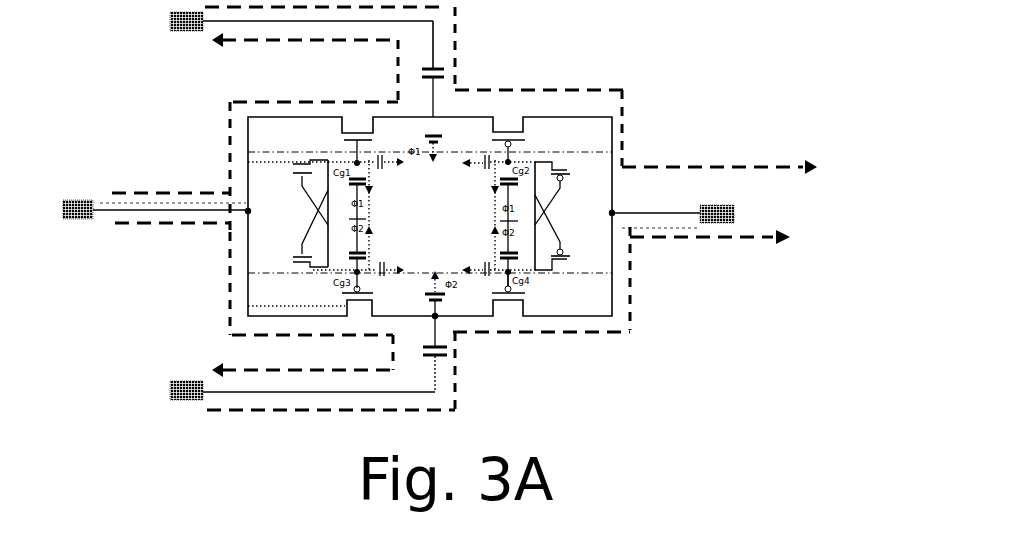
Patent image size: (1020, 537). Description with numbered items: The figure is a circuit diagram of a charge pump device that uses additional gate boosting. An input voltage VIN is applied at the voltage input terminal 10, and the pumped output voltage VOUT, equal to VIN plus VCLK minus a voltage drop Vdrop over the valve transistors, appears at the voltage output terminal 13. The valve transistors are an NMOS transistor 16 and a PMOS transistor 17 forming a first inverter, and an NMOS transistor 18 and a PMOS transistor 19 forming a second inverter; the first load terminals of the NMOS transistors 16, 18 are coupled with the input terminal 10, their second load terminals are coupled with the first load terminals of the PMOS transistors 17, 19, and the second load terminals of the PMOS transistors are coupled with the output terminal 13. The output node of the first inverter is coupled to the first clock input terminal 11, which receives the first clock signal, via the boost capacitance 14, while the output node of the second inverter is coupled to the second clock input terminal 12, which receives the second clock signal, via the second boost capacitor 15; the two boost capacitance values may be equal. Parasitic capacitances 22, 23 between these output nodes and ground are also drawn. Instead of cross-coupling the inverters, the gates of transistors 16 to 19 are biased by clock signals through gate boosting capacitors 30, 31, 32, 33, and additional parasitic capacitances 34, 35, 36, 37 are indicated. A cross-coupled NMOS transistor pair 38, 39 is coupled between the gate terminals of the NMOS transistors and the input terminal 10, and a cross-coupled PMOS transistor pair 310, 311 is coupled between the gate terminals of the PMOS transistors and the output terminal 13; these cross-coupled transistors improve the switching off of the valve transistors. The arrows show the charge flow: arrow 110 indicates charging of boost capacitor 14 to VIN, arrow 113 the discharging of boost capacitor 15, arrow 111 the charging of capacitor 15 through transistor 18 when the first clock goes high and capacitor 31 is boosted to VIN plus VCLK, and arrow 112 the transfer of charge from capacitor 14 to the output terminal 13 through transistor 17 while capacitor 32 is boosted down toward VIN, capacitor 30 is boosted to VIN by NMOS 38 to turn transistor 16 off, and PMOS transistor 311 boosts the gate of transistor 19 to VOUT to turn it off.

The voltage input terminal 10 is at (92, 202).
The first clock input terminal 11 is at (174, 34).
The second clock input terminal 12 is at (188, 398).
The voltage output terminal 13 is at (703, 224).
The boost capacitance 14 is at (440, 69).
The second boost capacitor 15 is at (447, 357).
The NMOS transistor 16 is at (342, 131).
The PMOS transistor 17 is at (524, 127).
The NMOS transistor 18 is at (342, 306).
The PMOS transistor 19 is at (523, 314).
The parasitic capacitance 22 is at (440, 137).
The parasitic capacitance 23 is at (443, 300).
The gate boosting capacitor 30 is at (363, 182).
The gate boosting capacitor 31 is at (365, 257).
The gate boosting capacitor 32 is at (498, 185).
The gate boosting capacitor 33 is at (502, 253).
The additional parasitic capacitance 34 is at (380, 158).
The additional parasitic capacitance 35 is at (383, 267).
The additional parasitic capacitance 36 is at (487, 155).
The additional parasitic capacitance 37 is at (487, 268).
The cross-coupled NMOS transistor 38 is at (293, 164).
The cross-coupled NMOS transistor 39 is at (292, 262).
The cross-coupled PMOS transistor 310 is at (567, 171).
The cross-coupled PMOS transistor 311 is at (567, 259).
The arrow 110 is at (229, 140).
The arrow 111 is at (268, 337).
The arrow 112 is at (610, 90).
The arrow 113 is at (632, 329).